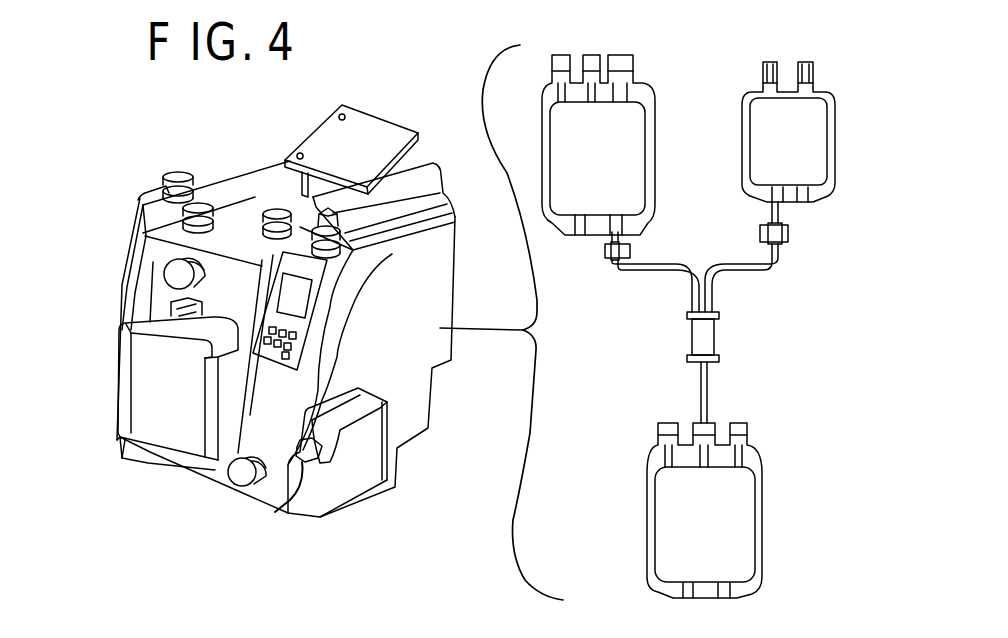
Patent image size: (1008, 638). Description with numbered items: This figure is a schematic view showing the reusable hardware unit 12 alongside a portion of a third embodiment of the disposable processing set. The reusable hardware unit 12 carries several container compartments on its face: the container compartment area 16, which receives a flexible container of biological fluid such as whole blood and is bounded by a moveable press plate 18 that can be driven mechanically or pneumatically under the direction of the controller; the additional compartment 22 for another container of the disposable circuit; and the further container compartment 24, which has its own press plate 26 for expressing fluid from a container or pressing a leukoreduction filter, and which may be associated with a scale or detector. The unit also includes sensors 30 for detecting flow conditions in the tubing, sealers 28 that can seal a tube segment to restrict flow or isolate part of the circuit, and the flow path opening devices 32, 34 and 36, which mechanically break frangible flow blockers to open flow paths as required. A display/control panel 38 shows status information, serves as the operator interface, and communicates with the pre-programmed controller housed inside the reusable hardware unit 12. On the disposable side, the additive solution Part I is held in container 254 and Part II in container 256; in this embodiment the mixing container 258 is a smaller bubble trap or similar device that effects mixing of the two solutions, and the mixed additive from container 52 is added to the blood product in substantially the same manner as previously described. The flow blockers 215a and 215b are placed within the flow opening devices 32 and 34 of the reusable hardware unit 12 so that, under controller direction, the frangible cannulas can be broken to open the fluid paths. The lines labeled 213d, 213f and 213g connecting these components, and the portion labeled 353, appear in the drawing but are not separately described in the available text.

The reusable hardware unit 12 is at (128, 190).
The container compartment area 16 is at (116, 380).
The press plate 18 is at (152, 415).
The compartment 22 is at (348, 475).
The container compartment 24 is at (413, 170).
The press plate 26 is at (375, 128).
The sealers 28 is at (173, 275).
The sensors 30 is at (212, 216).
The flow path opening device 32 is at (182, 315).
The flow path opening device 34 is at (342, 213).
The flow path opening device 36 is at (302, 460).
The display/control panel 38 is at (300, 336).
The container 52 is at (676, 505).
The container 254 is at (563, 118).
The container 256 is at (765, 122).
The mixing container 258 is at (721, 345).
The tubing segment 213d is at (700, 384).
The tubing segment 213f is at (654, 270).
The tubing segment 213g is at (743, 272).
The flow blocker 215a is at (604, 246).
The flow blocker 215b is at (778, 250).
The fluid circuit 353 is at (818, 392).